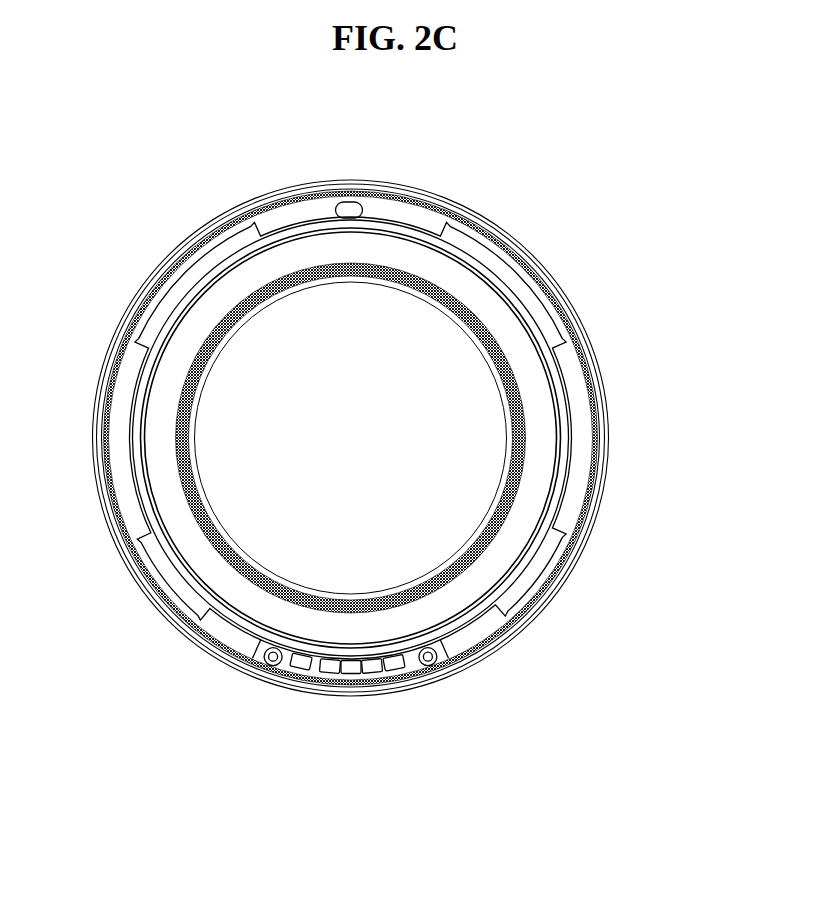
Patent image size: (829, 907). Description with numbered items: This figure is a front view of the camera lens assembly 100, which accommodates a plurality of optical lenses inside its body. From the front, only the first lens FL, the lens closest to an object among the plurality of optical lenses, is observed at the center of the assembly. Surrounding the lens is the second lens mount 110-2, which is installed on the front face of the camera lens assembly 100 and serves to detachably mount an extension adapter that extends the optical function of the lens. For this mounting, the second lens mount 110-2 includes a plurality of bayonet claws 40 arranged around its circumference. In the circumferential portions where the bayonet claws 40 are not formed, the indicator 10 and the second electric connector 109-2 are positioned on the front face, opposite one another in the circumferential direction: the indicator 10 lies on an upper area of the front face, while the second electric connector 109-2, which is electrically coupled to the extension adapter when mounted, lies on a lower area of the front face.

The camera lens assembly 100 is at (332, 103).
The indicator 10 is at (362, 205).
The bayonet claws 40 is at (190, 286).
The second lens mount 110-2 is at (587, 385).
The first lens FL is at (490, 458).
The second electric connector 109-2 is at (392, 670).